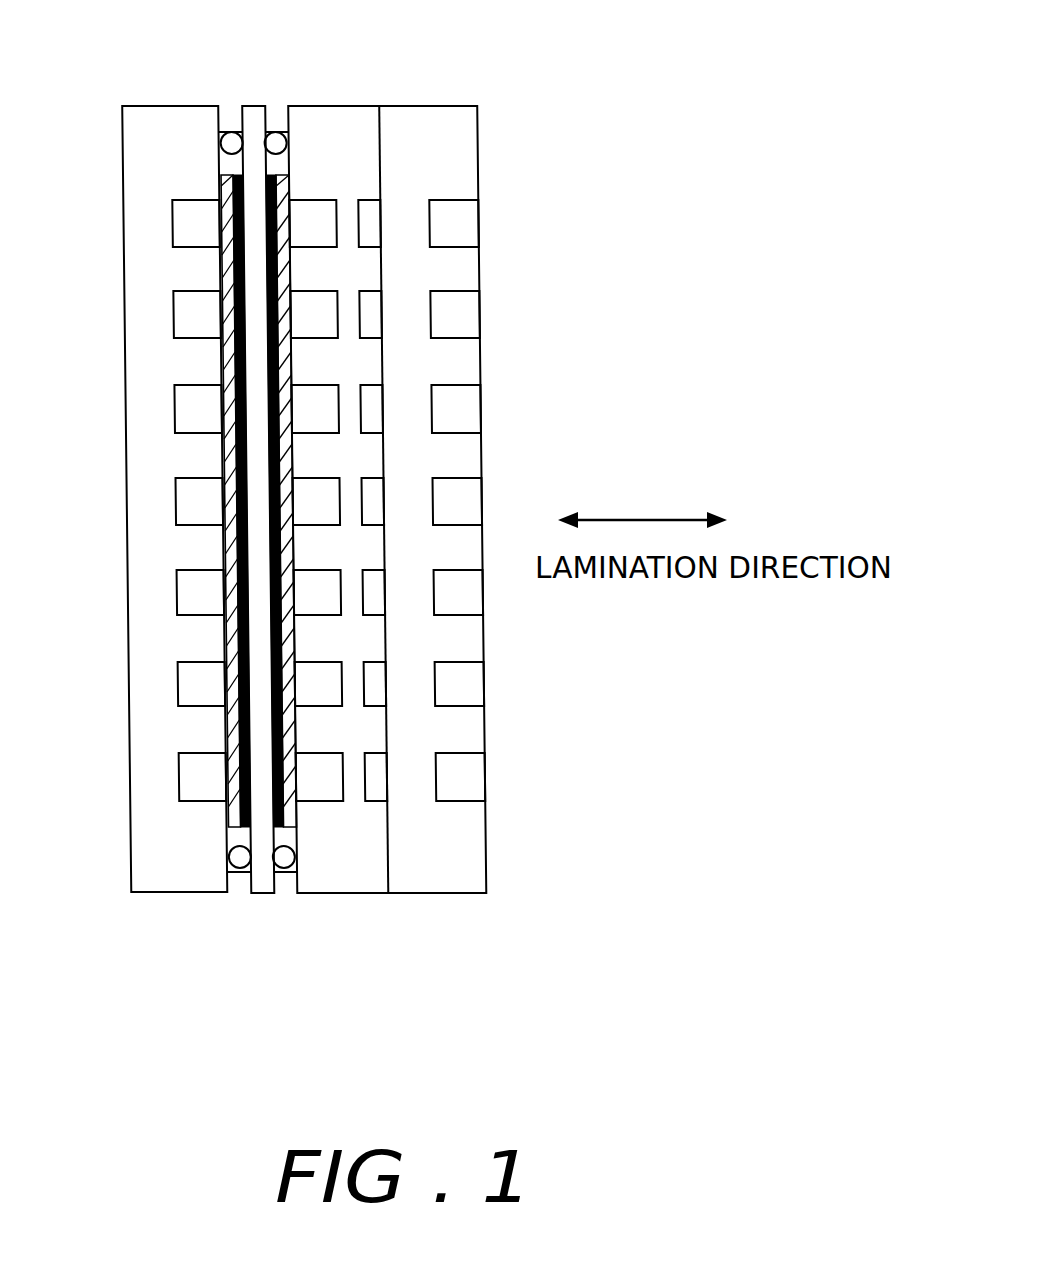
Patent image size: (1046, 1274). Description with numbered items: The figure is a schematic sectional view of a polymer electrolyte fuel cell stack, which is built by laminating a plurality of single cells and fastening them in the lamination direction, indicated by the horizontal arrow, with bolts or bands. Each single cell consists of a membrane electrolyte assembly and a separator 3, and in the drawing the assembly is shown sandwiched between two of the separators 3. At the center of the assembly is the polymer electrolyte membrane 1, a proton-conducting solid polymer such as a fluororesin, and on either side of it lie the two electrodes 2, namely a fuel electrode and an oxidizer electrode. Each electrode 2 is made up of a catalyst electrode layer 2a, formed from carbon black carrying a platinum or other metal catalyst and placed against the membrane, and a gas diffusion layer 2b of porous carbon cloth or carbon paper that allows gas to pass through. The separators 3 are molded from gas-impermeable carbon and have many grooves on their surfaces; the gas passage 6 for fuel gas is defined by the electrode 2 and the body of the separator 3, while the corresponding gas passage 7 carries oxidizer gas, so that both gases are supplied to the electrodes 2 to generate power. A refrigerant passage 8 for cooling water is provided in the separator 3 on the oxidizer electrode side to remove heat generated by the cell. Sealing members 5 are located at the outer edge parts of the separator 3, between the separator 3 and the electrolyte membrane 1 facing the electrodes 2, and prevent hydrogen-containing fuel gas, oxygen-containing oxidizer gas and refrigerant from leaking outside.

The polymer electrolyte membrane 1 is at (252, 105).
The electrode 2 is at (291, 504).
The catalyst electrode layer 2a is at (288, 175).
The gas diffusion layer 2b is at (287, 212).
The separator 3 is at (143, 858).
The sealing member 5 is at (227, 132).
The gas passage 6 is at (185, 593).
The gas passage 7 is at (318, 695).
The refrigerant passage 8 is at (377, 671).